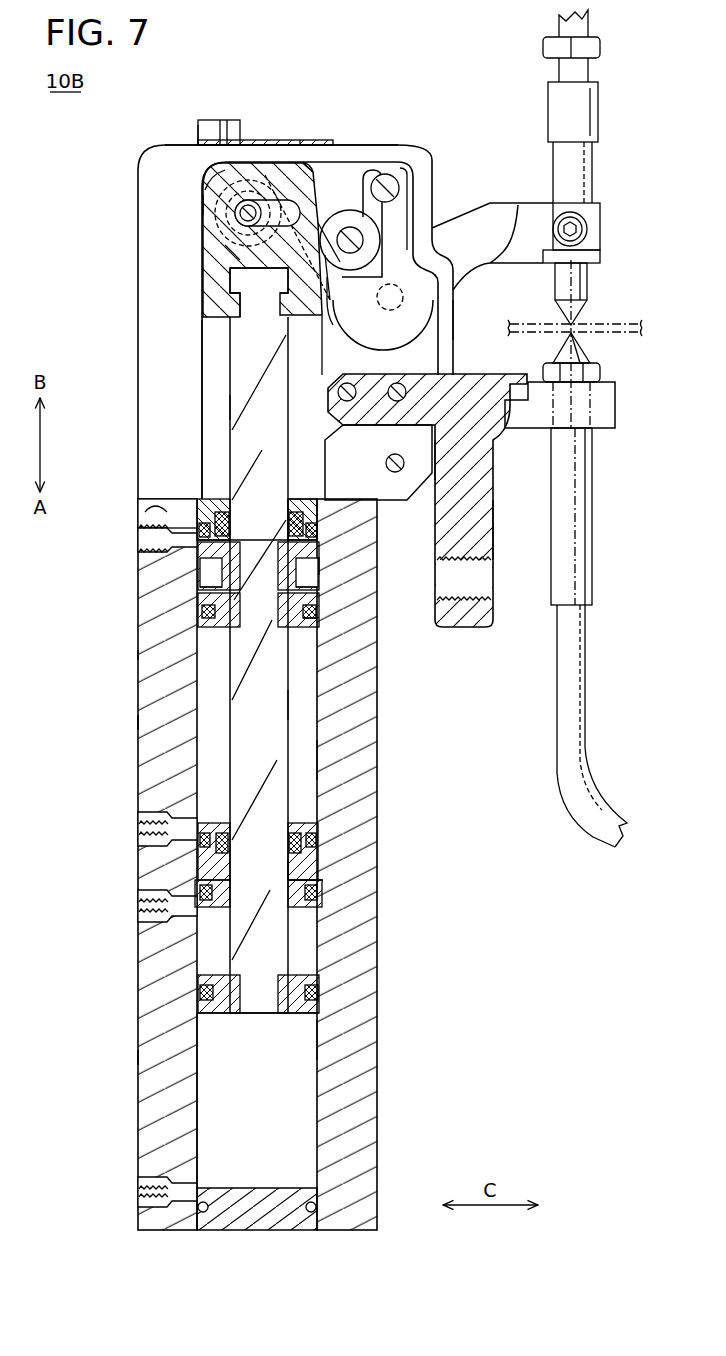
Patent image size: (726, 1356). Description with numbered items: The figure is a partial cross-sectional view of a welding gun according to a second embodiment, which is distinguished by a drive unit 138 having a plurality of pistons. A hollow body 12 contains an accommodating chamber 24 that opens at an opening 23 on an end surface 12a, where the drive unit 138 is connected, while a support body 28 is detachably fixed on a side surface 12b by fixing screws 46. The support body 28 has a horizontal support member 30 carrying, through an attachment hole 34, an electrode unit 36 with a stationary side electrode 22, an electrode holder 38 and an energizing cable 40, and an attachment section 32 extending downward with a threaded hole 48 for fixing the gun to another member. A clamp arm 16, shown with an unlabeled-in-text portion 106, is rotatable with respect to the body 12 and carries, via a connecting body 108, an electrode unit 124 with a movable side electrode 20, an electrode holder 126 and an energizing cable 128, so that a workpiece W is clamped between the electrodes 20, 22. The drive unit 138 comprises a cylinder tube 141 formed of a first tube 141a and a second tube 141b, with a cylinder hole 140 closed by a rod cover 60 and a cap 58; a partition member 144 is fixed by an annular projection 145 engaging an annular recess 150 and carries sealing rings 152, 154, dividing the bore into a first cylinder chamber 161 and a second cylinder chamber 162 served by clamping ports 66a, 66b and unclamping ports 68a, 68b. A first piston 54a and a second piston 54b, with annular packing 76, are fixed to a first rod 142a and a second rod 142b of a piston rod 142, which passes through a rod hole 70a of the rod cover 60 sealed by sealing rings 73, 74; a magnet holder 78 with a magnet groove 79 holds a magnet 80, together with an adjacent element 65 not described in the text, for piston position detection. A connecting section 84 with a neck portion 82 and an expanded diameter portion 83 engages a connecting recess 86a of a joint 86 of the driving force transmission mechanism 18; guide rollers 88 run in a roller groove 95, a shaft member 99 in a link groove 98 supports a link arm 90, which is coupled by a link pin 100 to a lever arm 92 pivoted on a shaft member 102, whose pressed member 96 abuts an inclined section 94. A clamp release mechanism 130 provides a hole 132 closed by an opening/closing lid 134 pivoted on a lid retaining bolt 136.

The body 12 is at (135, 258).
The end surface 12a is at (145, 507).
The side surface 12b is at (450, 457).
The clamp arm 16 is at (517, 200).
The driving force transmission mechanism 18 is at (204, 163).
The movable side electrode 20 is at (580, 292).
The stationary side electrode 22 is at (578, 353).
The opening 23 is at (300, 513).
The accommodating chamber 24 is at (202, 366).
The support body 28 is at (618, 417).
The support member 30 is at (475, 374).
The attachment section 32 is at (493, 532).
The attachment hole 34 is at (592, 405).
The electrode unit 36 is at (602, 372).
The electrode holder 38 is at (574, 478).
The energizing cable 40 is at (575, 688).
The fixing screws 46 is at (397, 402).
The threaded hole for attachment 48 is at (486, 590).
The first piston 54a is at (200, 612).
The second piston 54b is at (200, 993).
The cap 58 is at (255, 1196).
The rod cover 60 is at (305, 499).
The bearing holder 65 is at (205, 566).
The clamping port 66a is at (150, 830).
The clamping port 66b is at (150, 1195).
The unclamping port 68a is at (165, 541).
The unclamping port 68b is at (150, 910).
The rod hole 70a is at (288, 515).
The outer side sealing ring 73 is at (196, 516).
The inner side sealing ring 74 is at (300, 520).
The annular packing 76 is at (308, 612).
The magnet holder 78 is at (312, 565).
The magnet groove 79 is at (307, 596).
The magnet 80 is at (200, 588).
The neck portion 82 is at (232, 302).
The expanded diameter portion 83 is at (232, 253).
The connecting section 84 is at (228, 279).
The joint 86 is at (202, 198).
The connecting recess 86a is at (262, 325).
The guide rollers 88 is at (226, 190).
The link arm 90 is at (332, 165).
The lever arm 92 is at (416, 200).
The inclined section 94 is at (318, 160).
The roller groove 95 is at (300, 372).
The pressed member 96 is at (358, 172).
The link groove 98 is at (298, 160).
The shaft member 99 is at (201, 204).
The link pin 100 is at (397, 186).
The shaft member 102 is at (393, 310).
The arm recess 106 is at (472, 268).
The connecting body 108 is at (602, 255).
The electrode unit 124 is at (600, 275).
The electrode holder 126 is at (580, 163).
The energizing cable 128 is at (585, 25).
The clamp release mechanism 130 is at (247, 112).
The hole 132 is at (290, 140).
The opening/closing lid 134 is at (220, 120).
The lid retaining bolt 136 is at (208, 125).
The drive unit 138 is at (137, 775).
The cylinder hole 140 is at (318, 1040).
The cylinder tube 141 is at (137, 655).
The first tube 141a is at (152, 722).
The second tube 141b is at (152, 1056).
The piston rod 142 is at (227, 687).
The first rod 142a is at (240, 405).
The second rod 142b is at (290, 703).
The partition member 144 is at (307, 800).
The annular projection 145 is at (320, 855).
The annular recess 150 is at (303, 875).
The inner circumferential side sealing ring 152 is at (230, 850).
The outer circumferential side sealing ring 154 is at (315, 890).
The first cylinder chamber 161 is at (302, 760).
The second cylinder chamber 162 is at (302, 1088).
The workpiece W is at (537, 322).